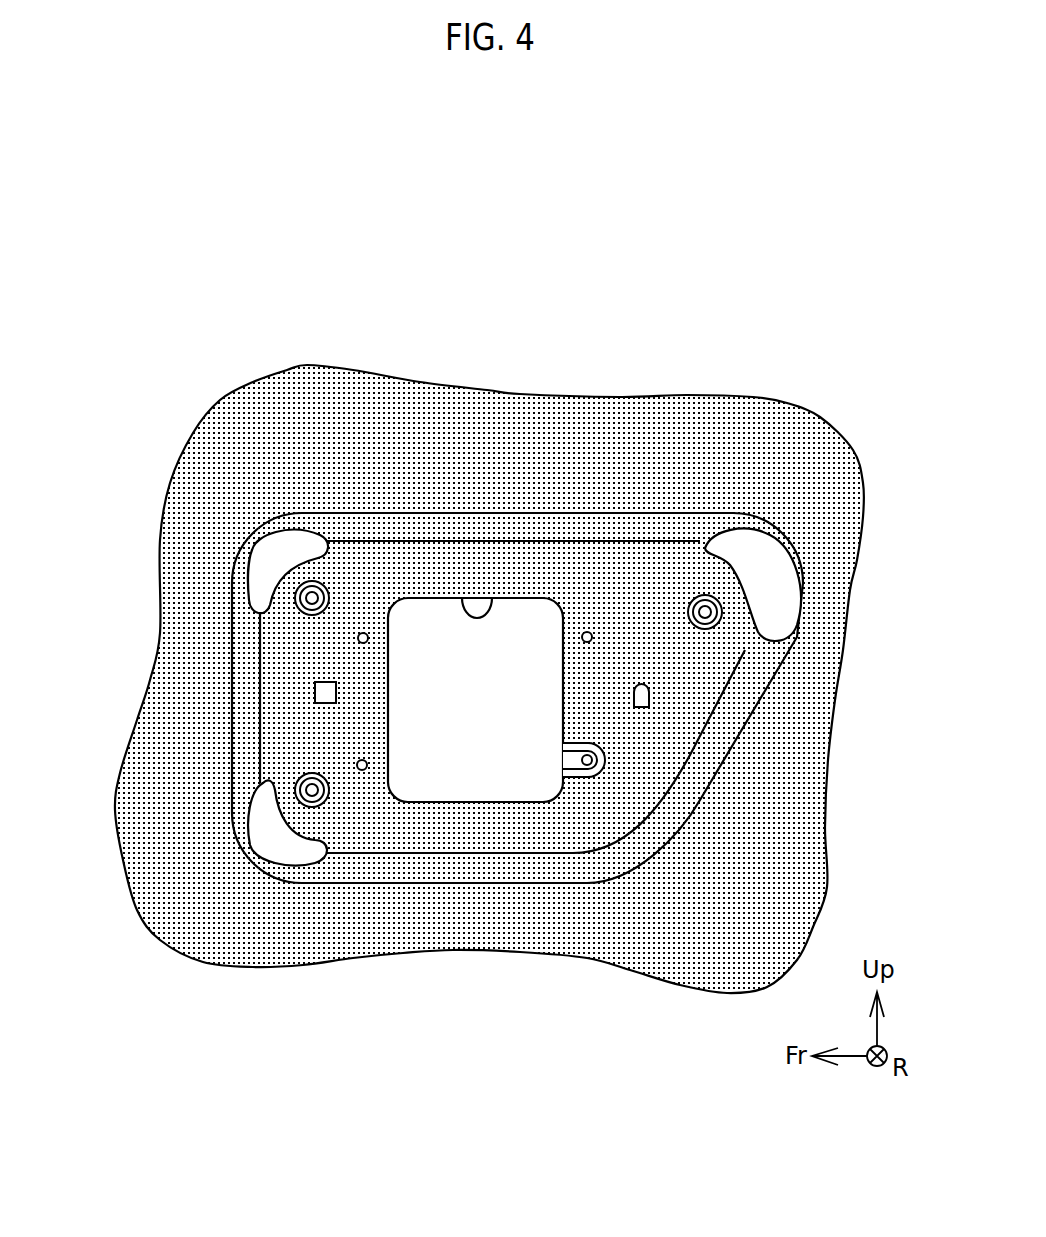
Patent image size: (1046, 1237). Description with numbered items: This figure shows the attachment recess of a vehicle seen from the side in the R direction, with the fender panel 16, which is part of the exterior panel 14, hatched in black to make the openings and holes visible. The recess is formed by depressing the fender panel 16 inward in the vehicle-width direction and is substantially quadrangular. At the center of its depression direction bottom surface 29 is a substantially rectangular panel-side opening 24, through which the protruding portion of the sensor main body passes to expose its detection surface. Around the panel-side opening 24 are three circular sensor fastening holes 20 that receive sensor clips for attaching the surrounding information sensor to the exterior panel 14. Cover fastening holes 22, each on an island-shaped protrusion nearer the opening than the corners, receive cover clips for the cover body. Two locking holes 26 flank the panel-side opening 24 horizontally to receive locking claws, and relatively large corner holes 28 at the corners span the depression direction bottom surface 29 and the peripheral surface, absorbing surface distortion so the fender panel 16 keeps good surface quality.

The exterior panel 14 is at (489, 639).
The fender panel 16 is at (750, 417).
The sensor fastening holes 20 is at (368, 638).
The cover fastening holes 22 is at (305, 610).
The panel-side opening 24 is at (492, 598).
The locking holes 26 is at (315, 692).
The corner holes 28 is at (246, 560).
The depression direction bottom surface 29 is at (477, 825).